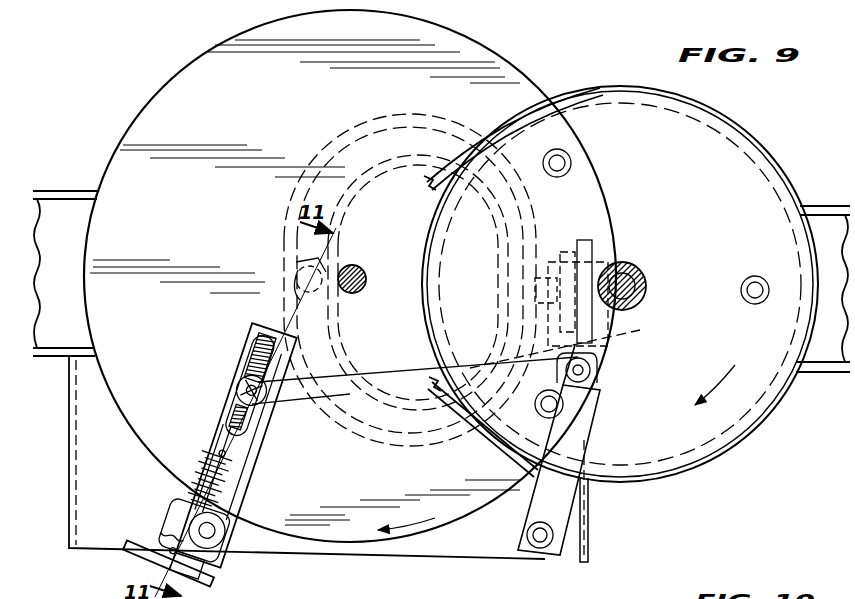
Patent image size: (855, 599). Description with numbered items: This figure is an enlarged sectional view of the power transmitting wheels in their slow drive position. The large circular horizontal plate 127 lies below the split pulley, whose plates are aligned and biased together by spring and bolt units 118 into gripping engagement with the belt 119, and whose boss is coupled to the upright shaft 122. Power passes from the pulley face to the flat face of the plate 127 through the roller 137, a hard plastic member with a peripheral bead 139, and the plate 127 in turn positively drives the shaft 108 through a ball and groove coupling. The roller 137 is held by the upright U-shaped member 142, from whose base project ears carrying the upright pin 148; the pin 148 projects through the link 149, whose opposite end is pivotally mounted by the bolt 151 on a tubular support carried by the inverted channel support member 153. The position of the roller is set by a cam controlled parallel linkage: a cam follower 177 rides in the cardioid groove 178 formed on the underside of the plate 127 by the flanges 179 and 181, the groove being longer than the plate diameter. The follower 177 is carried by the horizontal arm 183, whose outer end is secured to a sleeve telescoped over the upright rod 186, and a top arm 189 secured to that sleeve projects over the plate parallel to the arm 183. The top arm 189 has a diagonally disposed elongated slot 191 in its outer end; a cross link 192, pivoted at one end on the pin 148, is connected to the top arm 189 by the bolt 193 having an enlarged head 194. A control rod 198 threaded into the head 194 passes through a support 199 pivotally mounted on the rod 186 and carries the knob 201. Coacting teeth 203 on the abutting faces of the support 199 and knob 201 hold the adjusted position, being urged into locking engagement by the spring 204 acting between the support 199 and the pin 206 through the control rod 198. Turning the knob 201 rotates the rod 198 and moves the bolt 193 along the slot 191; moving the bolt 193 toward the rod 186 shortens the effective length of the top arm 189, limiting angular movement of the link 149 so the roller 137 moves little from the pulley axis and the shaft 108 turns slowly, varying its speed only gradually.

The horizontal plate 127 is at (160, 117).
The flange 179 is at (353, 120).
The groove 178 is at (400, 128).
The flange 181 is at (385, 172).
The cross link 192 is at (292, 410).
The shaft 108 is at (360, 270).
The belt 119 is at (442, 200).
The spring and bolt units 118 is at (565, 152).
The peripheral bead 139 is at (597, 236).
The roller 137 is at (606, 244).
The upright shaft 122 is at (640, 275).
The U-shaped member 142 is at (645, 334).
The upright pin 148 is at (592, 372).
The link 149 is at (562, 504).
The inverted channel support member 153 is at (578, 542).
The bolt 151 is at (542, 550).
The cam follower 177 is at (296, 262).
The horizontal arm 183 is at (266, 318).
The elongated slot 191 is at (252, 428).
The bolt 193 is at (248, 365).
The enlarged head 194 is at (246, 392).
The control rod 198 is at (236, 425).
The pin 206 is at (226, 454).
The spring 204 is at (206, 460).
The top arm 189 is at (238, 478).
The support 199 is at (176, 500).
The upright rod 186 is at (214, 526).
The coacting teeth 203 is at (162, 536).
The knob 201 is at (130, 546).